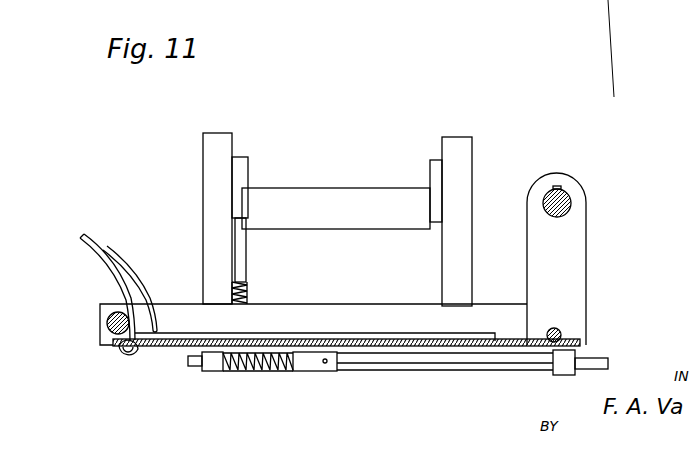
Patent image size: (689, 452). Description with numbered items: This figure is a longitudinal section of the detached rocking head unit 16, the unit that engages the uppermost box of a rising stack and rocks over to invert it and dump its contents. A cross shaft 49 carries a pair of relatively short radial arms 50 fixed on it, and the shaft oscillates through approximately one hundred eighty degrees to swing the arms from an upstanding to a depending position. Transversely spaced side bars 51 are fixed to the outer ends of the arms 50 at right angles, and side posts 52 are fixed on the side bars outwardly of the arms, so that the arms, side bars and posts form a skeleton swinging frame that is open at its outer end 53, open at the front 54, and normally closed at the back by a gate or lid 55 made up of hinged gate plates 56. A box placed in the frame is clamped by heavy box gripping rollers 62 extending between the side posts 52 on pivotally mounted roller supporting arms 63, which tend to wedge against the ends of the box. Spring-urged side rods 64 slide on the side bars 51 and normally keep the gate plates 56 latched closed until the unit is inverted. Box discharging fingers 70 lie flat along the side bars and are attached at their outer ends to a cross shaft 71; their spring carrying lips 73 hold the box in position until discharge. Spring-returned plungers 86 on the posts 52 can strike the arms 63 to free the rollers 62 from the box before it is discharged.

The rocking head unit 16 is at (175, 298).
The cross shaft 49 is at (565, 201).
The radial arms 50 is at (570, 263).
The side bars 51 is at (300, 325).
The side posts 52 is at (226, 144).
The open outer end 53 is at (118, 197).
The open front 54 is at (348, 122).
The gate or lid 55 is at (173, 350).
The gate plates 56 is at (234, 339).
The box gripping rollers 62 is at (327, 204).
The roller supporting arms 63 is at (240, 186).
The side rods 64 is at (400, 358).
The box discharging fingers 70 is at (387, 336).
The cross shaft 71 is at (107, 325).
The spring carrying lips 73 is at (97, 250).
The plungers 86 is at (243, 283).